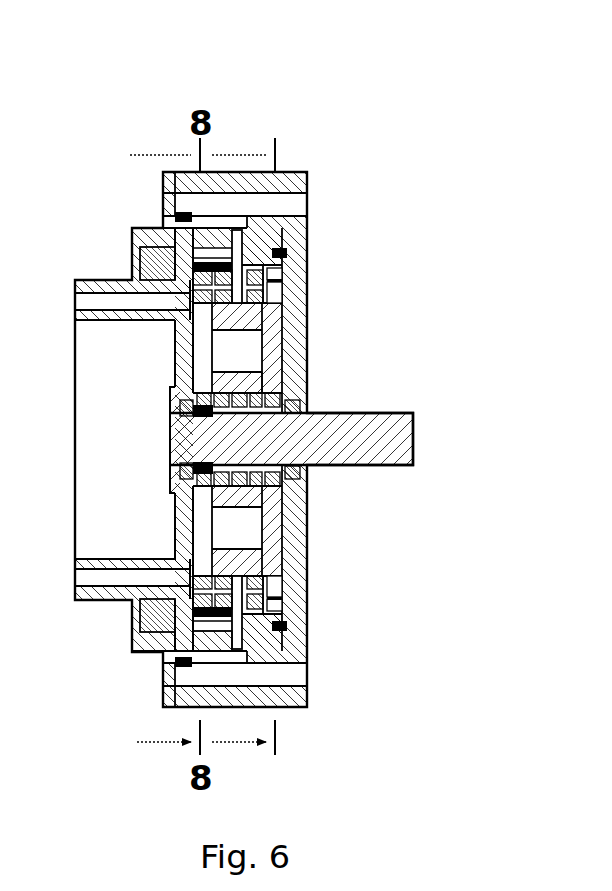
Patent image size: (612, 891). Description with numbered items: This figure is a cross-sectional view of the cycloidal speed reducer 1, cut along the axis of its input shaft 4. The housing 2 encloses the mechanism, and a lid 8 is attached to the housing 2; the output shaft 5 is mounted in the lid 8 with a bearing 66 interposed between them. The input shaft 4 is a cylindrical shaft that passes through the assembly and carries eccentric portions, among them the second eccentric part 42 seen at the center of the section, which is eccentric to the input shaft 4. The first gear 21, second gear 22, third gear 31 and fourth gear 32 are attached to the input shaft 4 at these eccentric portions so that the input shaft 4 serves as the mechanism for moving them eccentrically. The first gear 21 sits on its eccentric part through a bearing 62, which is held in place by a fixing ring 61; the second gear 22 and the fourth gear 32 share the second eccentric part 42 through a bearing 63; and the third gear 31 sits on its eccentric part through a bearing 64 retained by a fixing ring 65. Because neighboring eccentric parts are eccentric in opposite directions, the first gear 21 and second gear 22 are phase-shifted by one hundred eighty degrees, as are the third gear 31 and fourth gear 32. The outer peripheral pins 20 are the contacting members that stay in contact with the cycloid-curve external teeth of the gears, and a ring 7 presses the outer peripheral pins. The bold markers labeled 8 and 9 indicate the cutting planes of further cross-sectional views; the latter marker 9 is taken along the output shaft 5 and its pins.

The cycloidal speed reducer 1 is at (225, 68).
The housing 2 is at (307, 238).
The input shaft 4 is at (398, 413).
The output shaft 5 is at (173, 493).
The ring 7 is at (244, 262).
The lid 8 is at (131, 637).
The section line 9- 9 is at (250, 450).
The outer peripheral pins 20 is at (183, 216).
The first gear 21 is at (308, 686).
The second gear 22 is at (262, 630).
The third gear 31 is at (196, 632).
The fourth gear 32 is at (218, 630).
The second eccentric part 42 is at (179, 439).
The fixing ring 61 is at (300, 403).
The bearing 62 is at (280, 398).
The bearing 63 is at (271, 391).
The bearing 64 is at (186, 398).
The fixing ring 65 is at (188, 404).
The bearing 66 is at (140, 263).